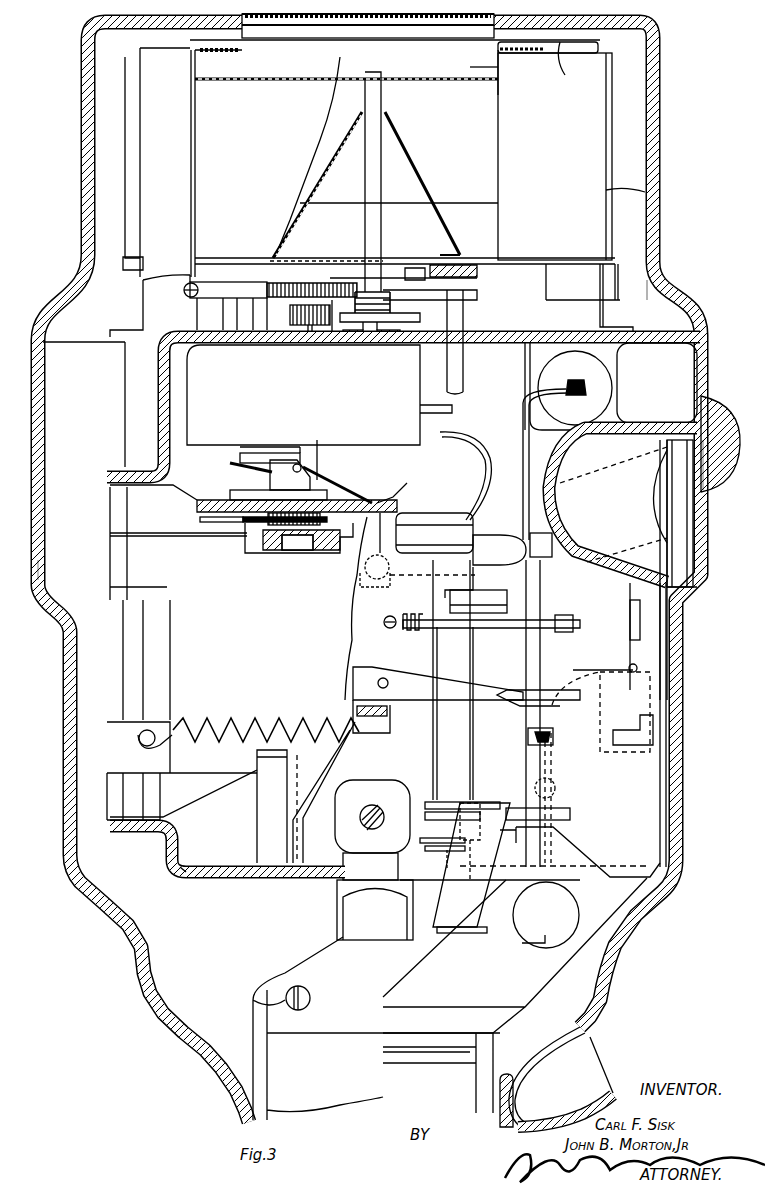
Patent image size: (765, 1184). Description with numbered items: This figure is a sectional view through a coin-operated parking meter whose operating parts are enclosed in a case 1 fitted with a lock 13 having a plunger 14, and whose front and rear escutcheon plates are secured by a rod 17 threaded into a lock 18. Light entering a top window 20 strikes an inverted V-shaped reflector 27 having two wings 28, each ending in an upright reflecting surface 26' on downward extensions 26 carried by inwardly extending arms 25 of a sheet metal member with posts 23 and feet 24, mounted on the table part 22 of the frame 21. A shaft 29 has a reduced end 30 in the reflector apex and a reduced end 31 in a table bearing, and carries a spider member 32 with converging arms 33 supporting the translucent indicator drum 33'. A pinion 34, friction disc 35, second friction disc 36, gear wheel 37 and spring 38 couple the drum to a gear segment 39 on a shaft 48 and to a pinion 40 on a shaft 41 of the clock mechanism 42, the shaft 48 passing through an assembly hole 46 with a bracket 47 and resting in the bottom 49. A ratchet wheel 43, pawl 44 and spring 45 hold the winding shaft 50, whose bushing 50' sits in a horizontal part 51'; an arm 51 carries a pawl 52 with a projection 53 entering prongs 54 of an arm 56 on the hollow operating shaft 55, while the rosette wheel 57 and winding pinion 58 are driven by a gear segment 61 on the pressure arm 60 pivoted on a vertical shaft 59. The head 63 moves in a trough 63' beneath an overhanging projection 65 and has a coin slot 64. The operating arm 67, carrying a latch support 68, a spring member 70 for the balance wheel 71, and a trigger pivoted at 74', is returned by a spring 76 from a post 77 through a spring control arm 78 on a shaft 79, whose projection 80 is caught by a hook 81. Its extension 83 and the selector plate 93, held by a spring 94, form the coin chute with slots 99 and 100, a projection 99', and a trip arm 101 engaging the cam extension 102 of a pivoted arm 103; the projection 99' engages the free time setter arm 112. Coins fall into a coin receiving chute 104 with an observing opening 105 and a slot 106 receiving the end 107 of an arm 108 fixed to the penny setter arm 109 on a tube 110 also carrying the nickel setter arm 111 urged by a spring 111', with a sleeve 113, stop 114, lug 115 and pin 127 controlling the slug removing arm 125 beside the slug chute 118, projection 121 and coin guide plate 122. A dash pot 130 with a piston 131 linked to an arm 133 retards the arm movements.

The case 1 is at (25, 545).
The lock 13 is at (322, 966).
The plunger 14 is at (362, 915).
The bolt or rod 17 is at (375, 805).
The lock 18 is at (372, 830).
The window 20 is at (325, 26).
The frame 21 is at (130, 425).
The table part 22 is at (652, 345).
The posts 23 is at (604, 294).
The feet 24 is at (618, 327).
The inwardly extending arms 25 is at (560, 62).
The downward extensions 26 is at (526, 77).
The upright reflecting surface 26' is at (470, 66).
The reflector 27 is at (418, 84).
The wings 28 is at (498, 160).
The shaft 29 is at (345, 100).
The reduced end 30 is at (386, 70).
The reduced end 31 is at (380, 335).
The spider member 32 is at (532, 258).
The converging arms 33 is at (464, 237).
The indicator drum 33' is at (654, 188).
The pinion 34 is at (382, 215).
The friction disc 35 is at (388, 343).
The second friction disc 36 is at (392, 306).
The gear wheel 37 is at (420, 340).
The spring 38 is at (388, 282).
The gear segment 39 is at (385, 282).
The pinion 40 is at (290, 318).
The shaft 41 is at (308, 338).
The clock mechanism 42 is at (272, 404).
The ratchet wheel 43 is at (300, 283).
The pawl 44 is at (225, 282).
The spring 45 is at (140, 303).
The assembly hole 46 is at (495, 331).
The bracket 47 is at (482, 296).
The shaft 48 is at (460, 362).
The bottom of the frame 49 is at (232, 878).
The winding shaft 50 is at (285, 553).
The bushing 50' is at (304, 560).
The arm 51 is at (278, 480).
The horizontal part of frame 51' is at (312, 531).
The pawl 52 is at (335, 490).
The projection 53 is at (232, 466).
The pawl releasing prongs 54 is at (242, 456).
The hollow operating shaft 55 is at (320, 460).
The arm 56 is at (280, 453).
The ratchet or rosette wheel 57 is at (385, 498).
The winding pinion 58 is at (265, 538).
The vertical shaft 59 is at (124, 670).
The pressure arm 60 is at (178, 542).
The gear segment 61 is at (220, 523).
The head or thumb piece 63 is at (623, 564).
The trough 63' is at (703, 431).
The slot 64 is at (620, 468).
The overhanging projection 65 is at (745, 435).
The operating arm 67 is at (174, 660).
The support 68 is at (365, 578).
The spring member 70 is at (488, 446).
The balance wheel 71 is at (456, 404).
The trigger pivot 74' is at (426, 533).
The spring 76 is at (242, 730).
The post 77 is at (175, 750).
The spring control arm 78 is at (299, 806).
The shaft 79 is at (300, 880).
The projection 80 is at (490, 722).
The hook 81 is at (345, 718).
The extension 83 is at (540, 557).
The selector plate 93 is at (594, 676).
The spring 94 is at (600, 680).
The slot 99 is at (505, 620).
The projection 99' is at (545, 615).
The slot 100 is at (550, 728).
The trip arm 101 is at (508, 708).
The cam extension 102 is at (510, 690).
The pivoted arm 103 is at (438, 683).
The coin receiving chute 104 is at (515, 1003).
The observing opening 105 is at (580, 889).
The slot 106 is at (465, 934).
The end of arm 107 is at (527, 932).
The arm 108 is at (471, 865).
The penny setter arm 109 is at (508, 813).
The tube or cylinder 110 is at (451, 670).
The nickel setter arm 111 is at (476, 713).
The spring 111' is at (426, 634).
The free time setter arm 112 is at (482, 597).
The sleeve 113 is at (445, 830).
The stop 114 is at (428, 802).
The lug 115 is at (445, 812).
The slug chute 118 is at (472, 1059).
The projection 121 is at (655, 726).
The coin guide plate 122 is at (668, 676).
The slug removing arm 125 is at (555, 742).
The pin 127 is at (445, 855).
The dash pot 130 is at (618, 396).
The piston 131 is at (575, 388).
The arm 133 is at (522, 478).